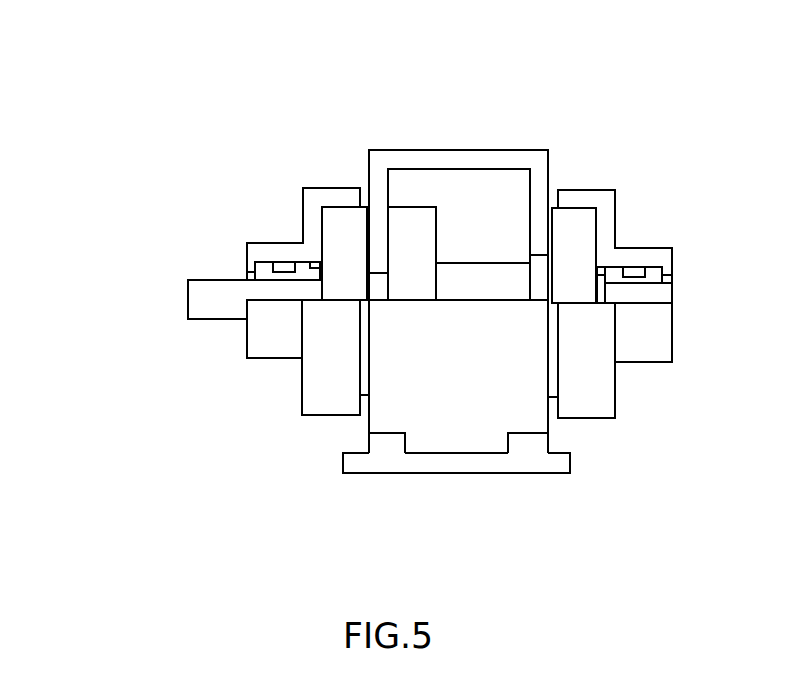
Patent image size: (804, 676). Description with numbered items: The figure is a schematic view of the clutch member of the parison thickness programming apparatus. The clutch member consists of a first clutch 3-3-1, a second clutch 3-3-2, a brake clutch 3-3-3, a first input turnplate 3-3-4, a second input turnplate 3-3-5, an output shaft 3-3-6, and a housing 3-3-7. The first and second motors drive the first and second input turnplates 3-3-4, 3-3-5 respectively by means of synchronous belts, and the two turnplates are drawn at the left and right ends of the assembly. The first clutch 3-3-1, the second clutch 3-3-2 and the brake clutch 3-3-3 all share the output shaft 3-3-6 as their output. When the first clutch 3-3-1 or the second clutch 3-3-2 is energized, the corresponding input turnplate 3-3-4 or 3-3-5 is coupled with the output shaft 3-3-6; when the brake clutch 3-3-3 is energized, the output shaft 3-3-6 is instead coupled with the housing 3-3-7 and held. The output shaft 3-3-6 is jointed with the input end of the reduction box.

The first clutch 3-3-1 is at (345, 223).
The second clutch 3-3-2 is at (573, 223).
The brake clutch 3-3-3 is at (412, 222).
The first input turnplate 3-3-4 is at (282, 253).
The second input turnplate 3-3-5 is at (637, 255).
The output shaft 3-3-6 is at (218, 303).
The housing 3-3-7 is at (455, 430).